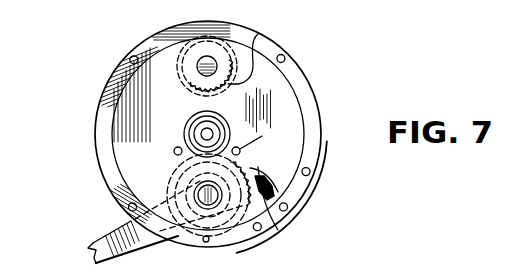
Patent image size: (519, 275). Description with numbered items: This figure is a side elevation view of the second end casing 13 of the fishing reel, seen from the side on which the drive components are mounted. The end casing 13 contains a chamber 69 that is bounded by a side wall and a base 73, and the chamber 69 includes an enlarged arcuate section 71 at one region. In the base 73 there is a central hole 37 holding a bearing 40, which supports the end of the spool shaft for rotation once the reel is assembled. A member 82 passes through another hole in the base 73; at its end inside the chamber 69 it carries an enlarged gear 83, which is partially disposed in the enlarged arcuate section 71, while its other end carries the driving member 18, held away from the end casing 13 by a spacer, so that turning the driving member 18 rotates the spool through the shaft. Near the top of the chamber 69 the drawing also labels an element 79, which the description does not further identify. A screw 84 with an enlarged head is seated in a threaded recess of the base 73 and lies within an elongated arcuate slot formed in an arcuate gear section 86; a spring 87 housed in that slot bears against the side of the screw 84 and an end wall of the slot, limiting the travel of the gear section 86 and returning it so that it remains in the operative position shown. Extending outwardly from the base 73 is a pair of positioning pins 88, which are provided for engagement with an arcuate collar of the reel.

The second end casing 13 is at (90, 100).
The driving member 18 is at (92, 241).
The central hole 37 is at (208, 118).
The bearing 40 is at (198, 128).
The chamber 69 is at (293, 122).
The enlarged arcuate section 71 is at (200, 243).
The base 73 is at (273, 84).
The pinion gear 79 is at (258, 34).
The member 82 is at (200, 192).
The enlarged gear 83 is at (238, 250).
The screw 84 is at (258, 169).
The arcuate gear section 86 is at (276, 193).
The spring 87 is at (273, 225).
The positioning pins 88 is at (175, 149).